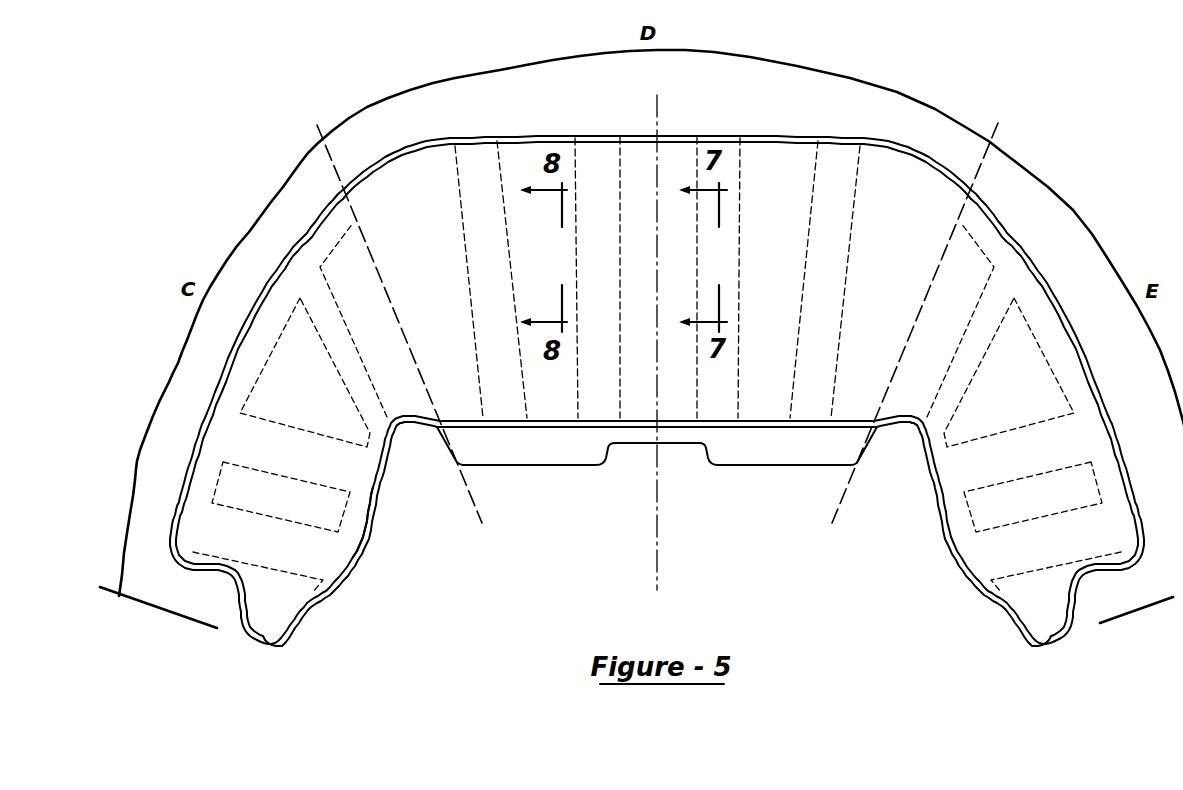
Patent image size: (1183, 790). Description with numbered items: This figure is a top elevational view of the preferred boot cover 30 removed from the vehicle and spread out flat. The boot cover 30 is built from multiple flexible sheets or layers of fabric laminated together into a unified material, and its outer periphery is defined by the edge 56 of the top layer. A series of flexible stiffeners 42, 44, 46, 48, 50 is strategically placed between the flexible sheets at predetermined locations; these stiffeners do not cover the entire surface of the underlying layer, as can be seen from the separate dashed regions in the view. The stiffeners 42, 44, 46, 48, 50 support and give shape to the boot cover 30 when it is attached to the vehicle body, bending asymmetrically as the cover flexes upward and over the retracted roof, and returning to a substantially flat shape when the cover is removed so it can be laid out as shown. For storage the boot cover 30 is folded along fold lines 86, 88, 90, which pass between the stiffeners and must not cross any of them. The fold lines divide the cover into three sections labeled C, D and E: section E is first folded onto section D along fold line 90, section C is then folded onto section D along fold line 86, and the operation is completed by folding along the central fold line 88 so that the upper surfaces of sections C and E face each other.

The boot cover 30 is at (946, 497).
The flexible stiffener 42 is at (490, 389).
The flexible stiffener 44 is at (360, 332).
The flexible stiffener 46 is at (287, 392).
The flexible stiffener 48 is at (275, 506).
The flexible stiffener 50 is at (264, 612).
The edge 56 is at (363, 537).
The fold line 86 is at (472, 497).
The fold line 88 is at (658, 497).
The fold line 90 is at (843, 505).